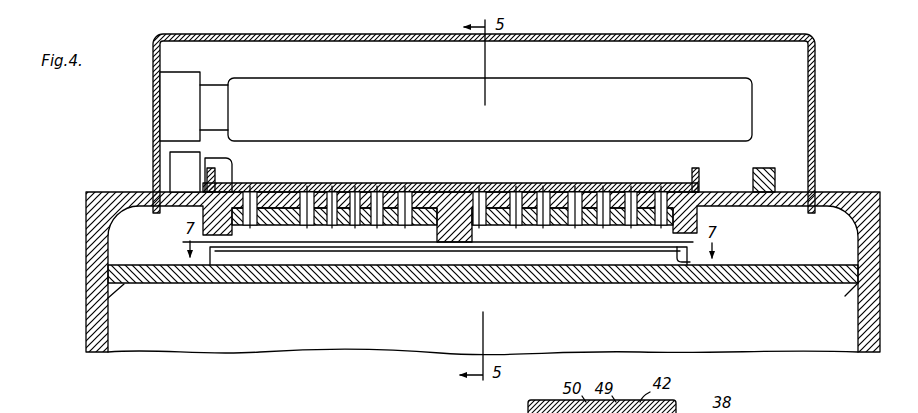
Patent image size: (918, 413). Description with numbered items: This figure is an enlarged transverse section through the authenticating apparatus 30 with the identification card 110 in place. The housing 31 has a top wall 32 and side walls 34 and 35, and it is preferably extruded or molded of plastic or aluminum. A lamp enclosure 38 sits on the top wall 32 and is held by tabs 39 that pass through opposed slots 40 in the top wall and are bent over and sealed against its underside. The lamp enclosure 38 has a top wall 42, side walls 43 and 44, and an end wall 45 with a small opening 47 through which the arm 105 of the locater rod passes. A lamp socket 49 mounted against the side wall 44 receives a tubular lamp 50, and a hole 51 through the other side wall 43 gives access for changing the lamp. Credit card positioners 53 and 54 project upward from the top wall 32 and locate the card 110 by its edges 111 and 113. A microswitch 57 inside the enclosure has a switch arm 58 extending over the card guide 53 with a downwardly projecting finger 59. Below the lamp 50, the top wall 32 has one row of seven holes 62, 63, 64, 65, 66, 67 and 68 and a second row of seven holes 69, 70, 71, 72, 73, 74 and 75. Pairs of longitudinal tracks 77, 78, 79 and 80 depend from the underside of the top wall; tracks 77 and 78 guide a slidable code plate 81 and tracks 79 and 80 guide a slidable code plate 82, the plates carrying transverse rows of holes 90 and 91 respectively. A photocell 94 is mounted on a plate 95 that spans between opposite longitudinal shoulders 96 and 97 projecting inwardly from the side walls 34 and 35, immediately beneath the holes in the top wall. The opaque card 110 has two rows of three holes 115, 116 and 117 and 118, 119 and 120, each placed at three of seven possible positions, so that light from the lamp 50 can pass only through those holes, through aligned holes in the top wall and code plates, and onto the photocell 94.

The authenticating apparatus 30 is at (92, 145).
The housing 31 is at (84, 288).
The top wall 32 is at (96, 191).
The side wall 34 is at (94, 338).
The side wall 35 is at (862, 354).
The lamp enclosure 38 is at (156, 50).
The tabs 39 is at (156, 210).
The slots 40 is at (150, 203).
The top wall 42 is at (312, 41).
The side wall 43 is at (158, 121).
The side wall 44 is at (818, 60).
The end wall 45 is at (784, 62).
The opening 47 is at (790, 176).
The lamp socket 49 is at (170, 92).
The tubular lamp 50 is at (612, 88).
The hole 51 is at (813, 85).
The credit card positioner 53 is at (210, 175).
The credit card positioner 54 is at (698, 170).
The microswitch 57 is at (178, 165).
The switch arm 58 is at (213, 160).
The finger 59 is at (236, 166).
The hole 62 is at (262, 228).
The hole 63 is at (284, 228).
The hole 64 is at (314, 228).
The hole 65 is at (338, 228).
The hole 66 is at (350, 228).
The hole 67 is at (366, 228).
The hole 68 is at (411, 228).
The hole 69 is at (462, 228).
The hole 70 is at (483, 228).
The hole 71 is at (518, 228).
The hole 72 is at (555, 228).
The hole 73 is at (590, 228).
The hole 74 is at (625, 228).
The hole 75 is at (660, 228).
The longitudinal track 77 is at (222, 248).
The longitudinal track 78 is at (432, 228).
The longitudinal track 79 is at (446, 228).
The longitudinal track 80 is at (686, 252).
The code plate 81 is at (390, 228).
The code plate 82 is at (512, 250).
The holes 90 is at (298, 232).
The holes 91 is at (634, 232).
The photocell 94 is at (243, 284).
The plate 95 is at (188, 285).
The shoulder 96 is at (115, 298).
The shoulder 97 is at (846, 296).
The arm 105 is at (768, 168).
The identification card 110 is at (467, 183).
The edge 111 is at (228, 160).
The edge 113 is at (700, 184).
The hole 115 is at (250, 188).
The hole 116 is at (278, 186).
The hole 117 is at (408, 186).
The hole 118 is at (527, 155).
The hole 119 is at (566, 186).
The hole 120 is at (600, 186).